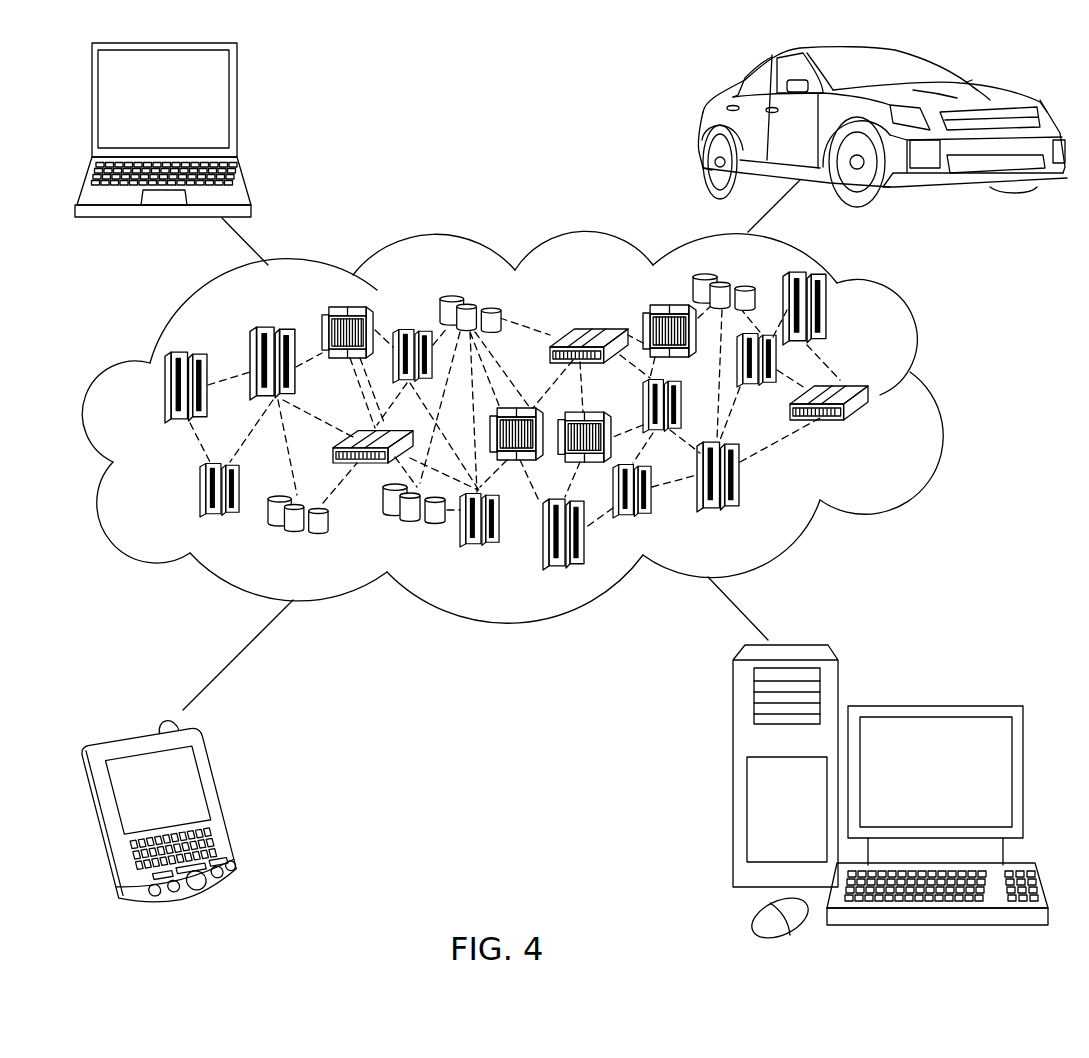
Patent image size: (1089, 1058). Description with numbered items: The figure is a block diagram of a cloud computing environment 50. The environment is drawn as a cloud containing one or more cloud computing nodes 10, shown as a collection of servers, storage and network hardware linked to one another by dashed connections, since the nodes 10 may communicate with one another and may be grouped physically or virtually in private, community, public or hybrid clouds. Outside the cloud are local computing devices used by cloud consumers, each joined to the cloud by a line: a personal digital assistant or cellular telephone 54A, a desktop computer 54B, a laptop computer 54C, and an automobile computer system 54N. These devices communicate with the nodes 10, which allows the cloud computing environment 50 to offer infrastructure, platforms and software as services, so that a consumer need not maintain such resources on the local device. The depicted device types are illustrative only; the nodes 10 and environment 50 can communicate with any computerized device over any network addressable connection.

The cloud computing nodes 10 is at (878, 432).
The cloud computing environment 50 is at (940, 395).
The personal digital assistant (PDA) or cellular telephone 54A is at (228, 803).
The desktop computer 54B is at (931, 705).
The laptop computer 54C is at (236, 108).
The automobile computer system 54N is at (697, 125).